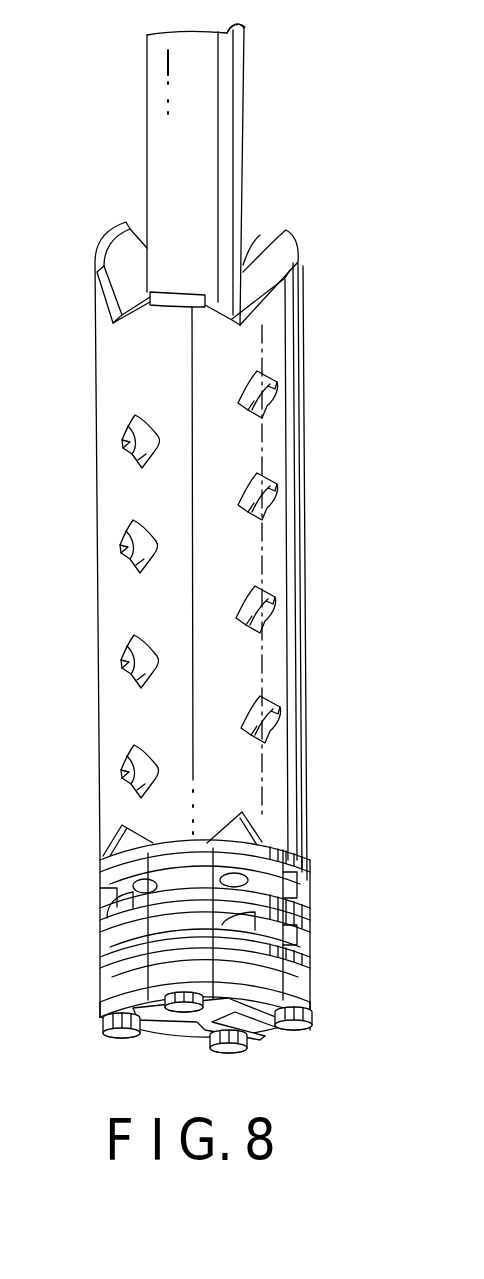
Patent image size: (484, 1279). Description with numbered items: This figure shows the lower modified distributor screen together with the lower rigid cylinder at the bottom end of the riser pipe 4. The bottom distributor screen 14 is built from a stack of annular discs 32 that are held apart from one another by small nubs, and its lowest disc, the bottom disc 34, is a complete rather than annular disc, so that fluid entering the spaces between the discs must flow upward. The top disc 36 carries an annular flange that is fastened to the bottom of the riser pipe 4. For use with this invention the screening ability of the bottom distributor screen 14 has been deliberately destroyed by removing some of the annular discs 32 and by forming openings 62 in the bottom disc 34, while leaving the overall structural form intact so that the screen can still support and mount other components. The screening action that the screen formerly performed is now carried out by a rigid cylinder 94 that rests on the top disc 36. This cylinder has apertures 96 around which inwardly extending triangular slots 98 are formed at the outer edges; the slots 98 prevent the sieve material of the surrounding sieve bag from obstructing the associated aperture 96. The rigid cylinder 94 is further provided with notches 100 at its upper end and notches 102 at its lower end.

The riser pipe 4 is at (245, 128).
The bottom distributor screen 14 is at (205, 950).
The annular discs 32 is at (100, 912).
The bottom disc 34 is at (270, 1031).
The top disc 36 is at (308, 857).
The openings 62 is at (193, 1027).
The rigid cylinder 94 is at (307, 558).
The apertures 96 is at (262, 490).
The triangular slots 98 is at (280, 380).
The notches 100 is at (258, 267).
The notches 102 is at (102, 840).